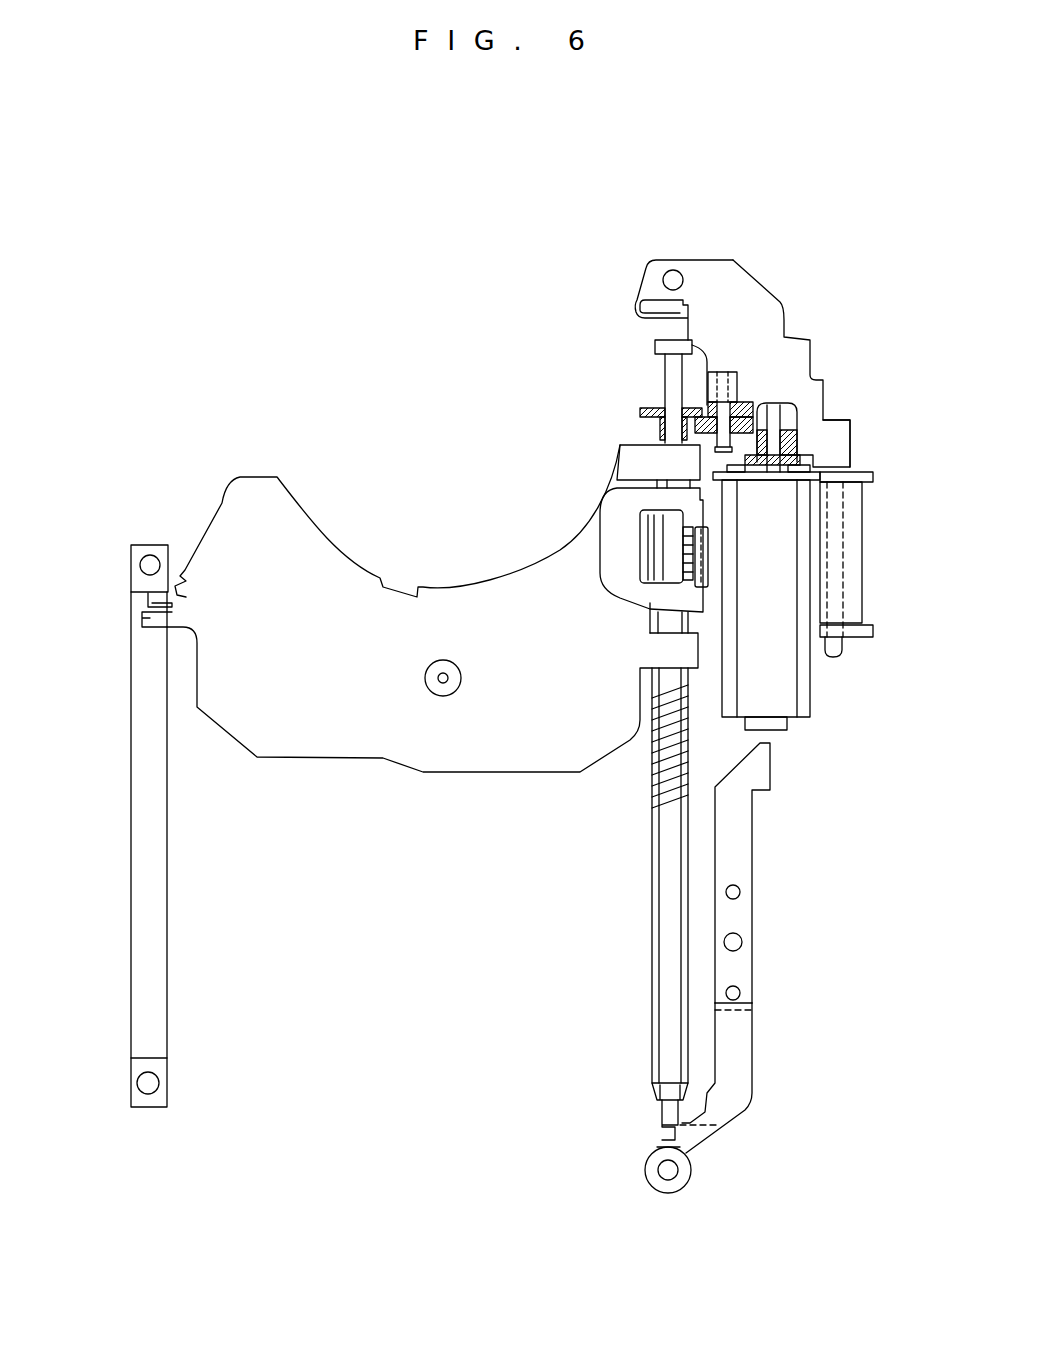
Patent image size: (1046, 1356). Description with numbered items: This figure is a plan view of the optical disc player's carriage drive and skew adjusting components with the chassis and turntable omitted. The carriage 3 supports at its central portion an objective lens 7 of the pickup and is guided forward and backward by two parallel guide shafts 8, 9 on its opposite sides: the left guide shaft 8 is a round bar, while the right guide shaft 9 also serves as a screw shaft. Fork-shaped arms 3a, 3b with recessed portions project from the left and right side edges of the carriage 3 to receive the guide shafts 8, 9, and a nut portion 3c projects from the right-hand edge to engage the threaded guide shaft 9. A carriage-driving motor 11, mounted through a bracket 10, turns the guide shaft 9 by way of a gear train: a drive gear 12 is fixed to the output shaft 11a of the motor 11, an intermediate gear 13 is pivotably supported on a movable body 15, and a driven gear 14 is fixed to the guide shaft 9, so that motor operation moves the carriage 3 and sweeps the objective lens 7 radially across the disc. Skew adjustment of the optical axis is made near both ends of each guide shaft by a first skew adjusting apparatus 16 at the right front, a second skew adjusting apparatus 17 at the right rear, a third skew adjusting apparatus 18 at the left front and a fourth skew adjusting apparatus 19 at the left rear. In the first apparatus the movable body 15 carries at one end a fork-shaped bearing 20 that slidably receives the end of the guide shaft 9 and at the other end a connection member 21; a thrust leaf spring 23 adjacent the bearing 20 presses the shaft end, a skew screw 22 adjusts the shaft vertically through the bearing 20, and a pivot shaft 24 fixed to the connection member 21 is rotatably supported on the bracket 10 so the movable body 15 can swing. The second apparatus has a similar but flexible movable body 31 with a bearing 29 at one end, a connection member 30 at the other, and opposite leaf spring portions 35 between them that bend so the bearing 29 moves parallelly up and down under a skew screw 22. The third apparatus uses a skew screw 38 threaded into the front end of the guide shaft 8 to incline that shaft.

The carriage 3 is at (495, 772).
The fork-shaped arm 3a is at (140, 622).
The fork-shaped arm 3b is at (677, 462).
The nut portion 3c is at (710, 548).
The objective lens 7 is at (441, 690).
The guide shaft 8 is at (158, 993).
The guide shaft 9 is at (655, 948).
The bracket 10 is at (863, 523).
The carriage-driving motor 11 is at (803, 700).
The output shaft 11a is at (790, 447).
The drive gear 12 is at (793, 415).
The intermediate gear 13 is at (748, 410).
The driven gear 14 is at (645, 410).
The movable body 15 is at (757, 317).
The first skew adjusting apparatus 16 is at (605, 312).
The second skew adjusting apparatus 17 is at (758, 1129).
The third skew adjusting apparatus 18 is at (155, 522).
The fourth skew adjusting apparatus 19 is at (142, 1130).
The bearing 20 is at (655, 345).
The connection member 21 is at (837, 428).
The skew screw 22 is at (675, 270).
The thrust leaf spring 23 is at (690, 307).
The pivot shaft 24 is at (840, 647).
The bearing 29 is at (662, 1125).
The connection member 30 is at (747, 912).
The movable body 31 is at (752, 987).
The leaf spring portion 35 is at (740, 1070).
The skew screw 38 is at (147, 565).